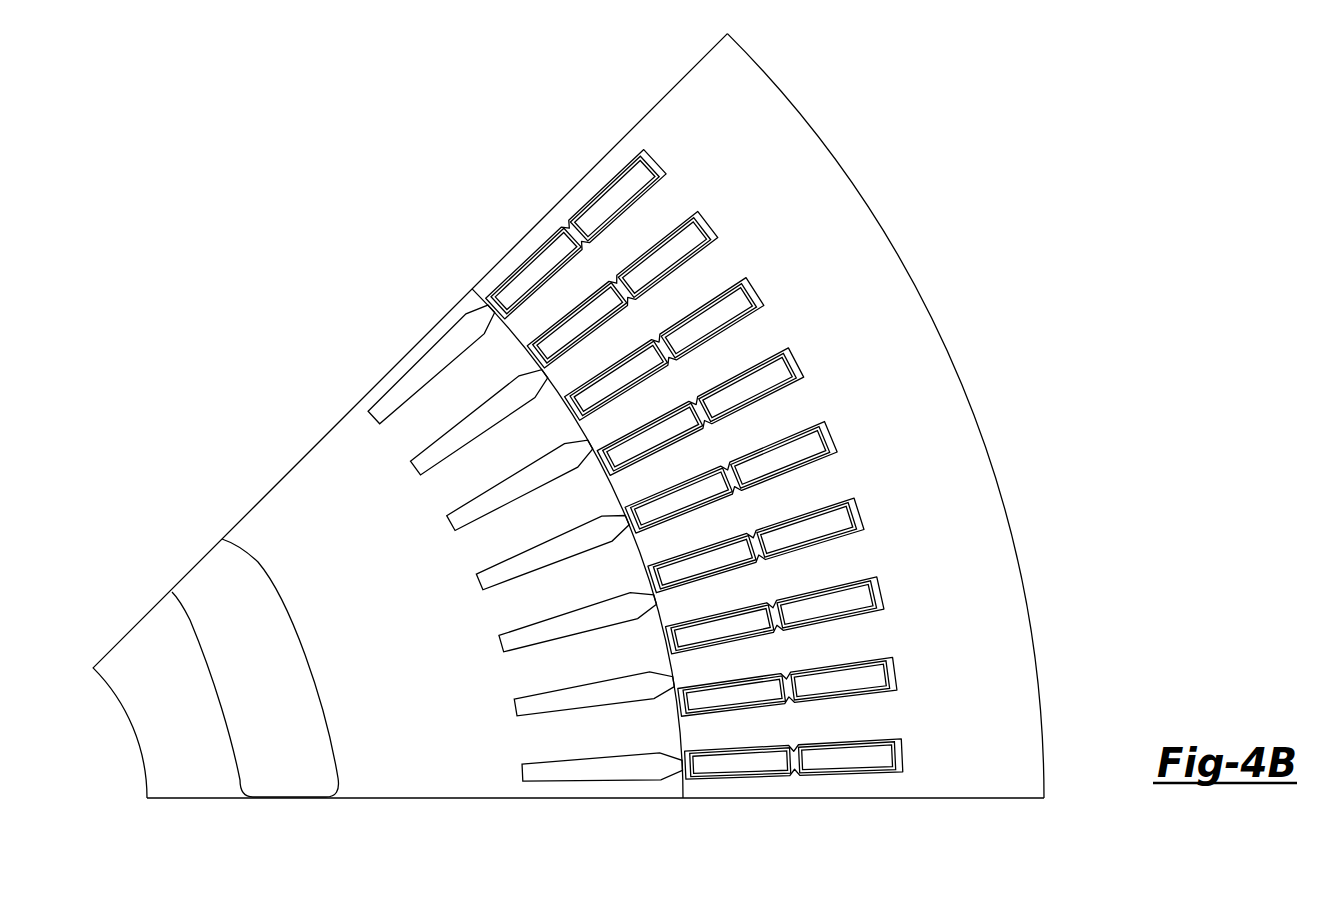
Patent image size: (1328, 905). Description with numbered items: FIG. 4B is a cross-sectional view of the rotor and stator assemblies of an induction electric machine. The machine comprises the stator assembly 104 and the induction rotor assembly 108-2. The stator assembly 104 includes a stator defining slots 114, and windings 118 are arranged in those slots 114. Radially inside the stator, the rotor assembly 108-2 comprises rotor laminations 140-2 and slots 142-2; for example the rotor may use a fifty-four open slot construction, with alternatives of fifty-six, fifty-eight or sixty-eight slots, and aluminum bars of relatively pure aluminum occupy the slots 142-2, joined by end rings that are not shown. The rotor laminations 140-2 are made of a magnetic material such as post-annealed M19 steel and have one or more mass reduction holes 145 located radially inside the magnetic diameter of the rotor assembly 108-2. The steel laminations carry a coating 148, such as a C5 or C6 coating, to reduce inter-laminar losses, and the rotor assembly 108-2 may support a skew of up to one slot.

The stator assembly 104 is at (659, 101).
The induction rotor assembly 108-2 is at (298, 458).
The slots 114 is at (517, 235).
The windings 118 is at (494, 305).
The rotor laminations 140-2 is at (408, 591).
The slots 142-2 is at (422, 469).
The mass reduction holes 145 is at (259, 652).
The coating 148 is at (439, 657).